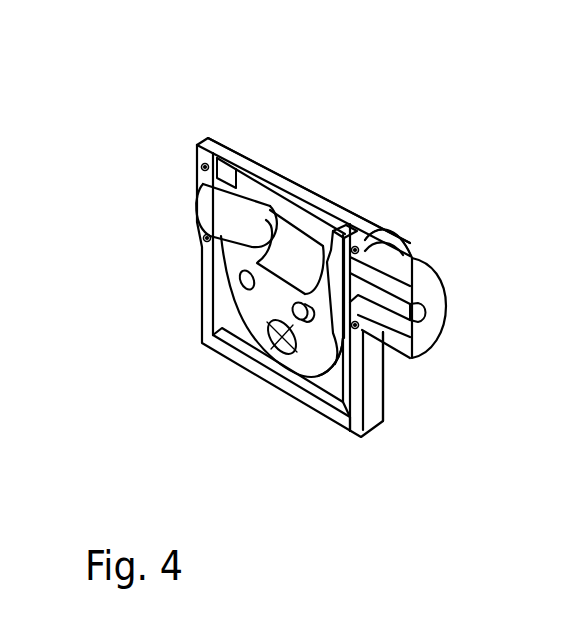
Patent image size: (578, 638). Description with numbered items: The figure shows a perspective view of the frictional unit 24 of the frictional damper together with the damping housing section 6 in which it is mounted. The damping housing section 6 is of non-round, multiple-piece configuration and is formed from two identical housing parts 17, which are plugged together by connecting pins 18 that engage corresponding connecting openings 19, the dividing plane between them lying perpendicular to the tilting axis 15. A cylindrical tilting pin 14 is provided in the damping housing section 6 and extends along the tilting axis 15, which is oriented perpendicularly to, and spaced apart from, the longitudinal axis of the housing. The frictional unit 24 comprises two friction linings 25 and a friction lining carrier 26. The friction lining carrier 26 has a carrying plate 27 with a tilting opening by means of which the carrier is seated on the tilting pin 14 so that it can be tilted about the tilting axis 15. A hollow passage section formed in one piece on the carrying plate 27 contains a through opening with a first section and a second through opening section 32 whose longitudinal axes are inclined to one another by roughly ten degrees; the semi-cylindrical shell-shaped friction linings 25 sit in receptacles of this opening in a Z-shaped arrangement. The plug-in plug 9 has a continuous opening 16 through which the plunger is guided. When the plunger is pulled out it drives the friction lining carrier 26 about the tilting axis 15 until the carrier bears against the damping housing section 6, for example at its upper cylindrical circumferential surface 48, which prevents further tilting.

The damping housing section 6 is at (298, 172).
The plug-in plug 9 is at (434, 298).
The tilting pin 14 is at (295, 355).
The tilting axis 15 is at (272, 338).
The continuous opening 16 is at (412, 318).
The housing parts 17 is at (247, 156).
The connecting pins 18 is at (198, 158).
The connecting openings 19 is at (207, 240).
The frictional unit 24 is at (337, 372).
The friction linings 25 is at (262, 230).
The friction lining carrier 26 is at (248, 313).
The carrying plate 27 is at (234, 294).
The second through opening section 32 is at (330, 223).
The upper cylindrical circumferential surface 48 is at (233, 176).